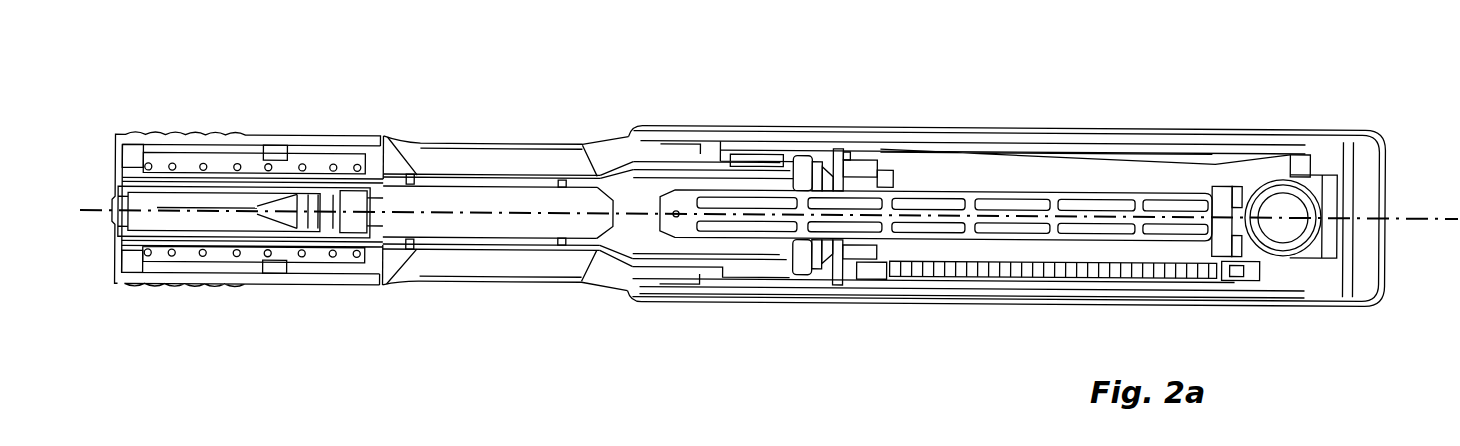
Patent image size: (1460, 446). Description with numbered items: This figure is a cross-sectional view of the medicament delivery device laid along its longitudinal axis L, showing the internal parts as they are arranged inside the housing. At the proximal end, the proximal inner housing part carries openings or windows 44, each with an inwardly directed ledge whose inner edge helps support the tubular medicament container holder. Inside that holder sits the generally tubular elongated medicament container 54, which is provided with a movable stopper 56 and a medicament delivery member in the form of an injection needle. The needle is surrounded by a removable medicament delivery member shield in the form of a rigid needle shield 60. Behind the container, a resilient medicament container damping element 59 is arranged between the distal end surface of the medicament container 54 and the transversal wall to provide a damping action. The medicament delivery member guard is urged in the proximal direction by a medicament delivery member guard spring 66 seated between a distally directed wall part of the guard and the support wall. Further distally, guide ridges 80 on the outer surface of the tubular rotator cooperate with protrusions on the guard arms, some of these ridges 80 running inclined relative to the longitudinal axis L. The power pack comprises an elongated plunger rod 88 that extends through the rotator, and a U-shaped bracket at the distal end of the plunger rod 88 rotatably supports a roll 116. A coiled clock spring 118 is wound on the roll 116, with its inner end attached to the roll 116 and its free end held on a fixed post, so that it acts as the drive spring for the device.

The window 44 is at (485, 140).
The medicament container 54 is at (500, 228).
The movable stopper 56 is at (611, 226).
The medicament container damping element 59 is at (829, 166).
The rigid needle shield 60 is at (177, 189).
The medicament delivery member guard spring 66 is at (219, 258).
The guide ridges 80 is at (652, 160).
The plunger rod 88 is at (692, 198).
The roll 116 is at (1283, 217).
The clock spring 118 is at (1004, 182).
The longitudinal axis L is at (1408, 217).